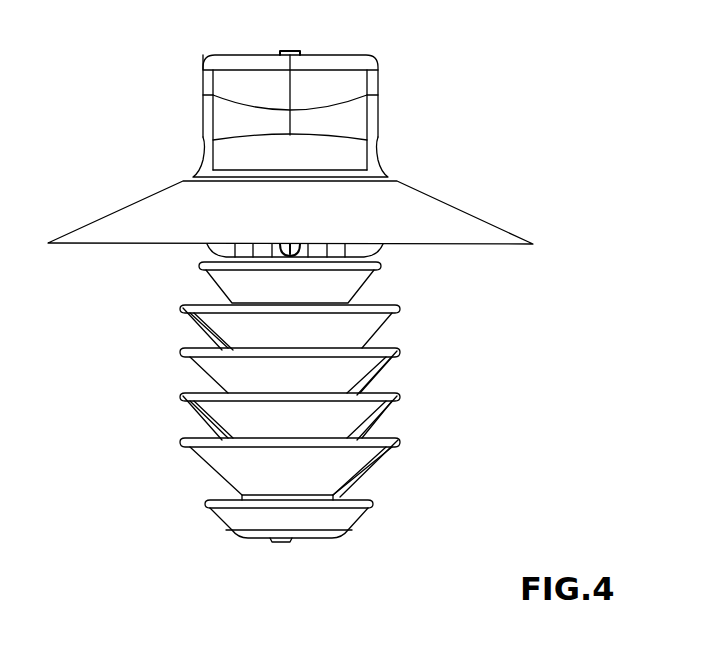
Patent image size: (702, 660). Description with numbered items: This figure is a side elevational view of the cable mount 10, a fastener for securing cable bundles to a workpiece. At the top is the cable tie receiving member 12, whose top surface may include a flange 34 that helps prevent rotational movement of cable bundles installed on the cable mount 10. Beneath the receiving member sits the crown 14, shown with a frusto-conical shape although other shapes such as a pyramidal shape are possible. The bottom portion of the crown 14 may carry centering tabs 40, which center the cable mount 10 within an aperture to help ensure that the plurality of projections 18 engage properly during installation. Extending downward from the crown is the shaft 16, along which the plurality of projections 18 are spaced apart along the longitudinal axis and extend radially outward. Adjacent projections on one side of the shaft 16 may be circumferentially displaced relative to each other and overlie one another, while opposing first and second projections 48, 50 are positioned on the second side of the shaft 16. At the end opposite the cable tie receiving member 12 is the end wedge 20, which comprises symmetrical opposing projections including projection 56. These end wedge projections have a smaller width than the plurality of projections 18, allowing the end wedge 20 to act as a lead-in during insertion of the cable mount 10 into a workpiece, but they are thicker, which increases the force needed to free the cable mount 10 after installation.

The cable mount 10 is at (425, 105).
The cable tie receiving member 12 is at (380, 158).
The crown 14 is at (497, 222).
The shaft 16 is at (268, 254).
The plurality of projections 18 is at (176, 417).
The end wedge 20 is at (262, 537).
The flange 34 is at (297, 52).
The centering tabs 40 is at (305, 263).
The first projection 48 is at (392, 455).
The second projection 50 is at (392, 407).
The opposing projection 56 is at (372, 515).